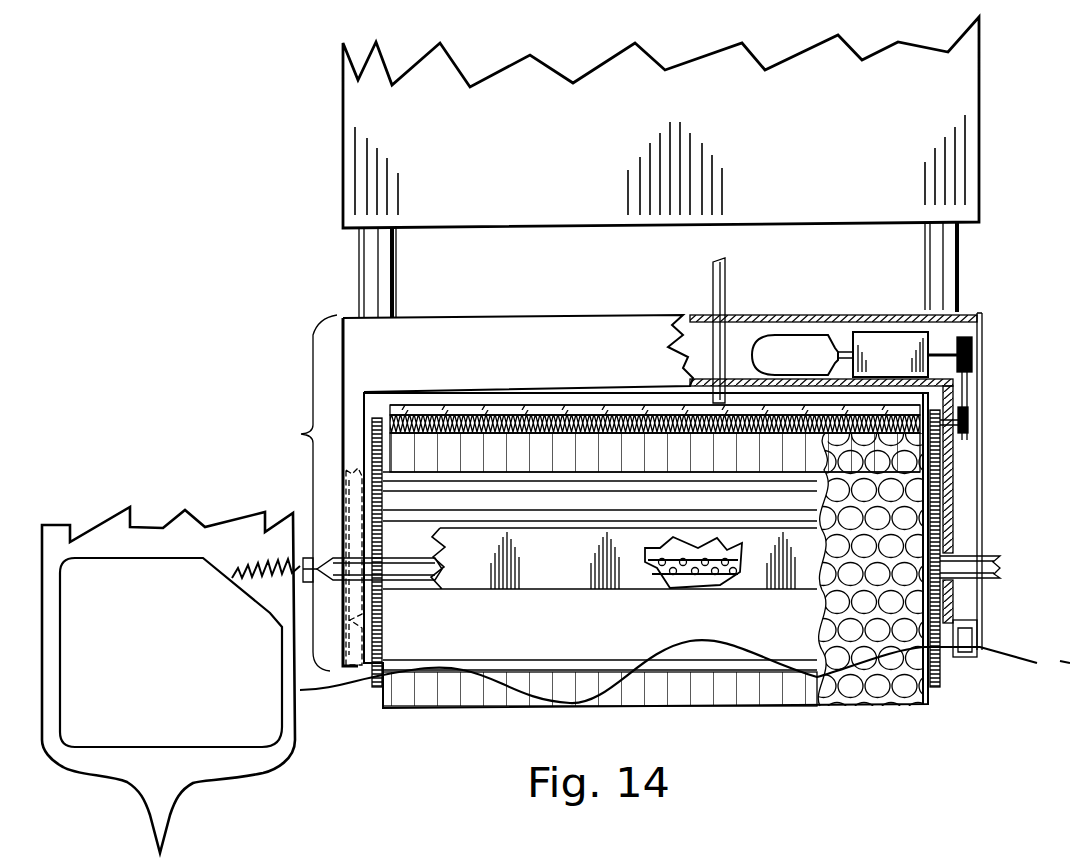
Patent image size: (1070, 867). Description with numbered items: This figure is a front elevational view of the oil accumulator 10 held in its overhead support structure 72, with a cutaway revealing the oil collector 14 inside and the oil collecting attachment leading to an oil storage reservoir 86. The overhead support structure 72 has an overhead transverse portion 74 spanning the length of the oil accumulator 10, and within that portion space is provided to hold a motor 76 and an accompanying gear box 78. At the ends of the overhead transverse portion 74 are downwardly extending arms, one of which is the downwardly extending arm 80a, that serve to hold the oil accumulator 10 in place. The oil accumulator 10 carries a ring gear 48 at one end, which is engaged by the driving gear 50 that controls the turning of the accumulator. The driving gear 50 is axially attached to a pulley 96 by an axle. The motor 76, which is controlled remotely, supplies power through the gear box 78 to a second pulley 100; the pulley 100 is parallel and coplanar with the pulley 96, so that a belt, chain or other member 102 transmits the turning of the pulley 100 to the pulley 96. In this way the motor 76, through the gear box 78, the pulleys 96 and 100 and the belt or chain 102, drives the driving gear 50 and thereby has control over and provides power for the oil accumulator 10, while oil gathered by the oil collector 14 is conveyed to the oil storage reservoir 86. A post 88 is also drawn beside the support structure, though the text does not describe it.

The oil accumulator 10 is at (728, 742).
The oil collector 14 is at (543, 589).
The ring gear 48 is at (977, 504).
The driving gear 50 is at (958, 446).
The overhead support structure 72 is at (352, 323).
The overhead transverse portion 74 is at (590, 362).
The motor 76 is at (798, 367).
The gear box 78 is at (905, 367).
The downwardly extending arm 80a is at (307, 493).
The oil storage reservoir 86 is at (170, 659).
The support post 88 is at (948, 276).
The pulley 96 is at (970, 414).
The second pulley 100 is at (979, 322).
The belt or chain 102 is at (968, 388).